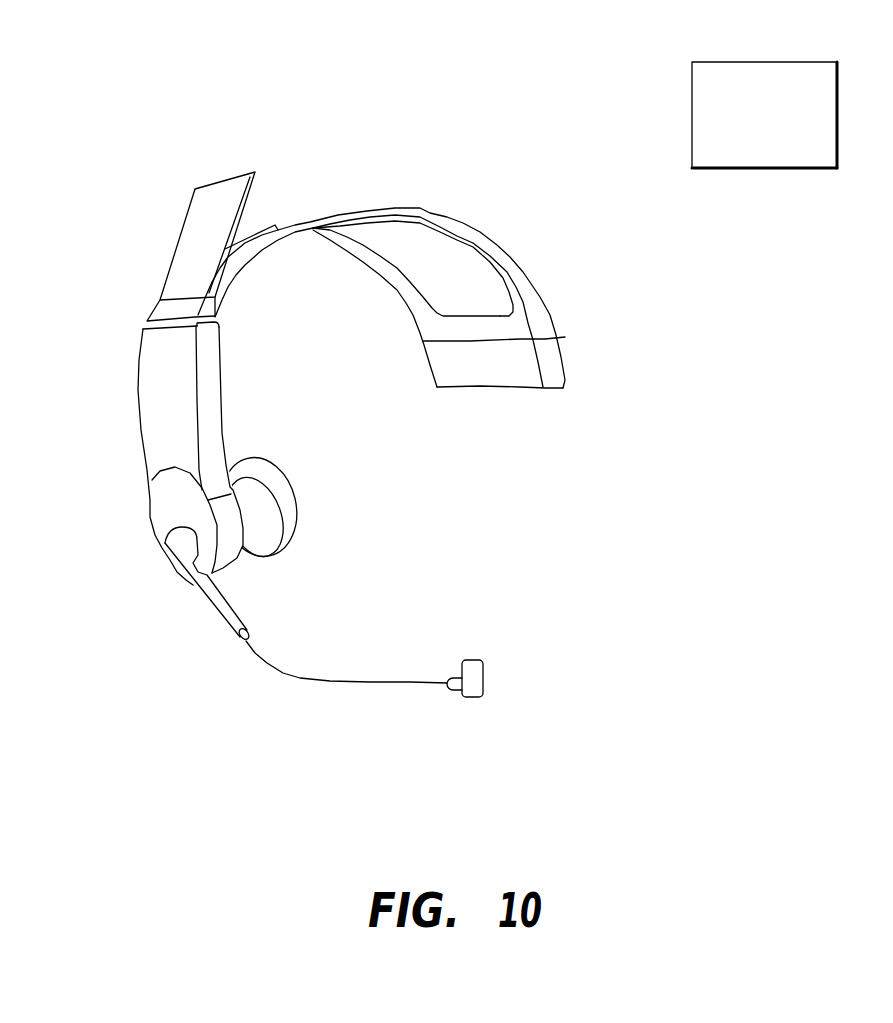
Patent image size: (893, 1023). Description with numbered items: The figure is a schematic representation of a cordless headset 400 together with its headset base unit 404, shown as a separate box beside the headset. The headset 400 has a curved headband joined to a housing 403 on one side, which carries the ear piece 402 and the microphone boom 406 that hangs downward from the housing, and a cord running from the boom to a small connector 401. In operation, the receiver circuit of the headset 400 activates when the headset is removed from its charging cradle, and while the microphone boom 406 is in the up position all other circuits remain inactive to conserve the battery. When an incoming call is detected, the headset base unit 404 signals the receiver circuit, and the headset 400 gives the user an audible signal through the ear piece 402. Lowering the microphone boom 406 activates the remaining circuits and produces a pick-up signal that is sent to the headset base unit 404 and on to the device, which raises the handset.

The cordless headset 400 is at (399, 149).
The connector plug 401 is at (473, 698).
The ear piece 402 is at (298, 505).
The housing 403 is at (138, 392).
The headset base unit 404 is at (770, 62).
The microphone boom 406 is at (298, 677).